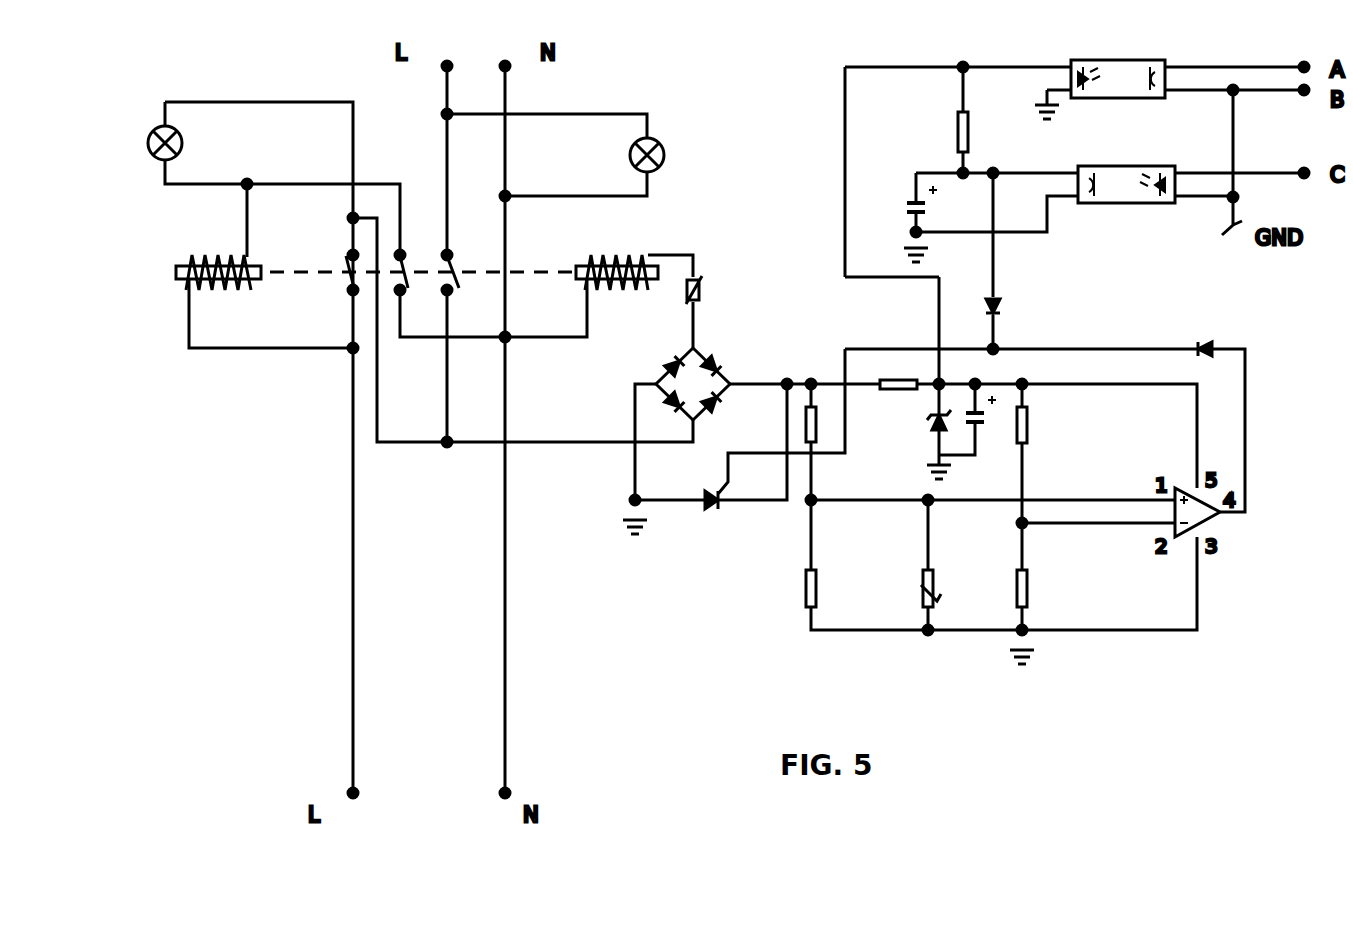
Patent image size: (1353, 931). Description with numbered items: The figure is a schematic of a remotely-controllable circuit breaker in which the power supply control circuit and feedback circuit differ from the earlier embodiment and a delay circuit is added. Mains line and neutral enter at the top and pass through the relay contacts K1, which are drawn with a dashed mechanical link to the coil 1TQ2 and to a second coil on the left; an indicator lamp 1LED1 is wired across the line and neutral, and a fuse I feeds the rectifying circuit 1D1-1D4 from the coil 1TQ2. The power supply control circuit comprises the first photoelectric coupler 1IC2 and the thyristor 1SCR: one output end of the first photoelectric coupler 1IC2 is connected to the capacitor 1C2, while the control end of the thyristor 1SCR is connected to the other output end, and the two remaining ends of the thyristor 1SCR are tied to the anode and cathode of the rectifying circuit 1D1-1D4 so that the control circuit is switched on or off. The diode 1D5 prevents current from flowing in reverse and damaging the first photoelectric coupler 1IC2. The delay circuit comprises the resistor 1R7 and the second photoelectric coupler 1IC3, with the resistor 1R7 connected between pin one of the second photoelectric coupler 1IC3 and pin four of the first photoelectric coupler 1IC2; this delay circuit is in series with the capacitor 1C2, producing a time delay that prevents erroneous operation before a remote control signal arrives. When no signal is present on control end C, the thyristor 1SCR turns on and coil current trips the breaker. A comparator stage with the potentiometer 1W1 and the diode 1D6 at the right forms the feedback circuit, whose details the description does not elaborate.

The indicator LED 1LED1 is at (687, 155).
The relay switch contacts K1 is at (464, 258).
The relay coil 1TQ2 is at (634, 289).
The fuse I is at (687, 312).
The rectifying circuit 1D1-1D4 is at (652, 382).
The thyristor 1SCR is at (764, 449).
The resistor 1R7 is at (961, 120).
The capacitor 1C2 is at (968, 217).
The diode 1D5 is at (1023, 261).
The diode 1D6 is at (1193, 335).
The second photoelectric coupler 1IC3 is at (1169, 117).
The first photoelectric coupler 1IC2 is at (1180, 195).
The potentiometer 1W1 is at (953, 584).